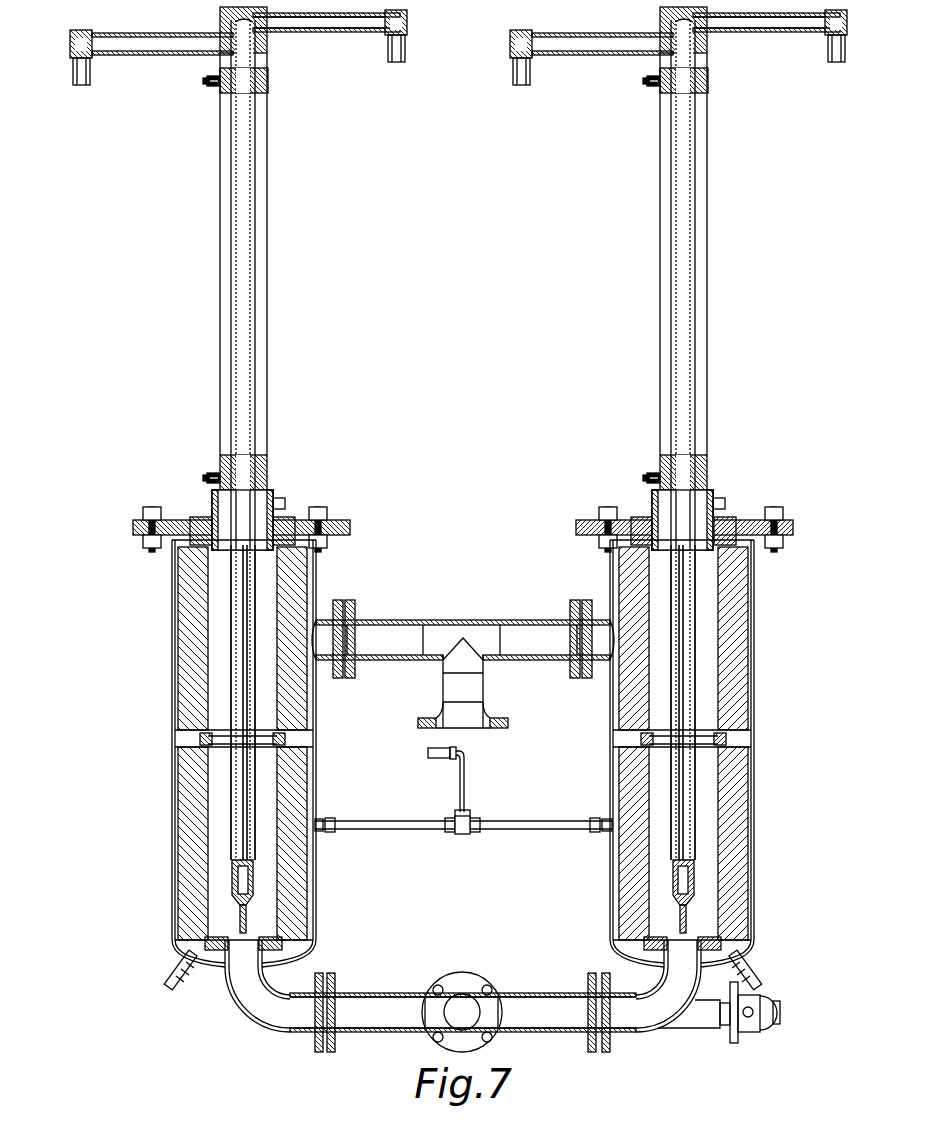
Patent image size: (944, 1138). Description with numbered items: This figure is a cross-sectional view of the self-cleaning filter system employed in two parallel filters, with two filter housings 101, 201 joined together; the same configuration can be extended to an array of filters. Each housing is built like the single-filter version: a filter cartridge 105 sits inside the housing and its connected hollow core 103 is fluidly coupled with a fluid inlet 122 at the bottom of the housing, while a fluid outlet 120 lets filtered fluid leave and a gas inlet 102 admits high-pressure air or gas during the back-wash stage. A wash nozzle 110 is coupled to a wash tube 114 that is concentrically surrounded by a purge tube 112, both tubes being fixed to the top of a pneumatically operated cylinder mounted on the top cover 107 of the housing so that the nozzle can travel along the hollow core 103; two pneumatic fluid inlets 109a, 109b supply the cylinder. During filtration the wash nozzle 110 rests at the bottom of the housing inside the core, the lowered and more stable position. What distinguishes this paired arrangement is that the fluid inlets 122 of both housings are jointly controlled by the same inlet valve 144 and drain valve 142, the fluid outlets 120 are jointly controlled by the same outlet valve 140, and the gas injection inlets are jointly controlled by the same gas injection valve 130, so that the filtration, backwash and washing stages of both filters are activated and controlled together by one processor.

The filter housing 101 is at (315, 730).
The gas inlet 102 is at (320, 822).
The hollow core 103 is at (272, 694).
The filter cartridge 105 is at (297, 878).
The top cover 107 is at (350, 530).
The pneumatic fluid inlet 109a is at (215, 80).
The pneumatic fluid inlet 109b is at (212, 478).
The wash nozzle 110 is at (233, 880).
The purge tube 112 is at (232, 706).
The wash tube 114 is at (240, 665).
The fluid outlet 120 is at (390, 630).
The fluid inlet 122 is at (245, 955).
The gas injection valve 130 is at (432, 755).
The outlet valve 140 is at (465, 723).
The drain valve 142 is at (755, 1033).
The inlet valve 144 is at (462, 985).
The filter housing 201 is at (752, 733).